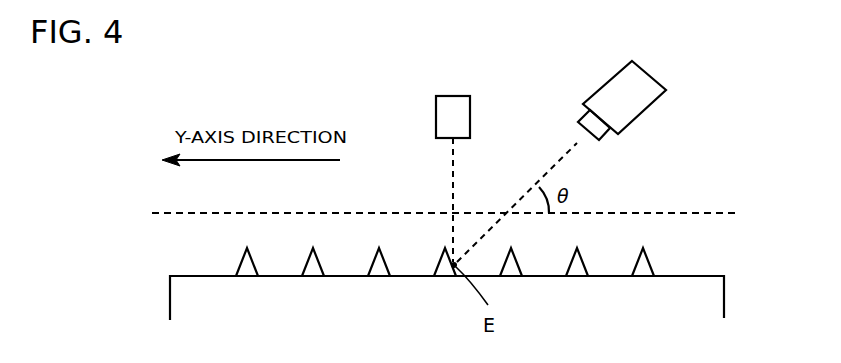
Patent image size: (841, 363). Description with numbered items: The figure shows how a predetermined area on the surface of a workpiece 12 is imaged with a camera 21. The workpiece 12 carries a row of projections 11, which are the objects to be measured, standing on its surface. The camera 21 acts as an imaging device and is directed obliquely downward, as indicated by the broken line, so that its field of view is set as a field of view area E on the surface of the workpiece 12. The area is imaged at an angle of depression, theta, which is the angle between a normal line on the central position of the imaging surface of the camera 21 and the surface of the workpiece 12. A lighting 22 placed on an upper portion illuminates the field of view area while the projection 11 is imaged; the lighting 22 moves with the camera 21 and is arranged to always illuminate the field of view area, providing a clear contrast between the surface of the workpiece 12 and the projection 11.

The projection 11 is at (243, 265).
The workpiece 12 is at (181, 303).
The camera 21 is at (642, 79).
The lighting 22 is at (450, 108).